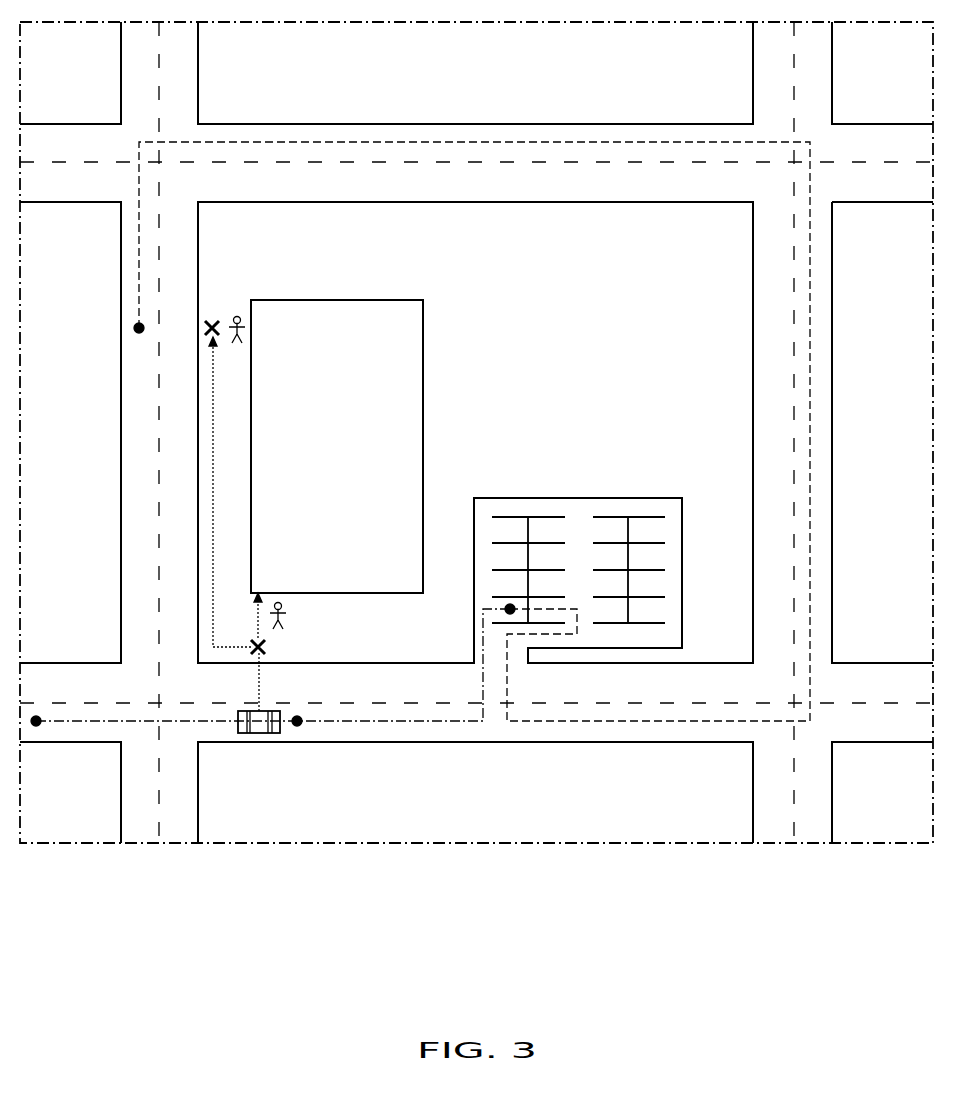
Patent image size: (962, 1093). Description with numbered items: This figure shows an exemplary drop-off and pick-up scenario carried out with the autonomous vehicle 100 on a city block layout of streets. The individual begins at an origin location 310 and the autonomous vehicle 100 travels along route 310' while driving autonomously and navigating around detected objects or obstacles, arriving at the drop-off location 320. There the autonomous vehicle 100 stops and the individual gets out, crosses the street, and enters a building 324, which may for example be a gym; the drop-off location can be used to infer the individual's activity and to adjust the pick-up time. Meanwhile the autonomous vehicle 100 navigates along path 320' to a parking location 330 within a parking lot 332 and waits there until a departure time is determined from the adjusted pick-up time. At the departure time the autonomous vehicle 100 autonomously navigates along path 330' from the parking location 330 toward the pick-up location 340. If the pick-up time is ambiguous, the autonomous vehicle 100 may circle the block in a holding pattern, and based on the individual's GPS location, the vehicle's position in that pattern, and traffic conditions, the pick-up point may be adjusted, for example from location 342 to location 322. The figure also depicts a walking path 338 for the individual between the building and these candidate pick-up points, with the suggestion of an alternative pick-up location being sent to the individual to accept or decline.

The autonomous vehicle 100 is at (260, 735).
The origin location 310 is at (46, 748).
The route 310' is at (166, 432).
The drop-off location 320 is at (335, 756).
The route to parking location 320' is at (476, 704).
The adjusted pick-up location 322 is at (284, 626).
The building 324 is at (362, 300).
The parking location 330 is at (492, 528).
The route to pick-up location 330' is at (476, 432).
The parking lot 332 is at (640, 499).
The pedestrian path 338 is at (213, 531).
The pick-up location 340 is at (133, 328).
The original pick-up location 342 is at (223, 315).